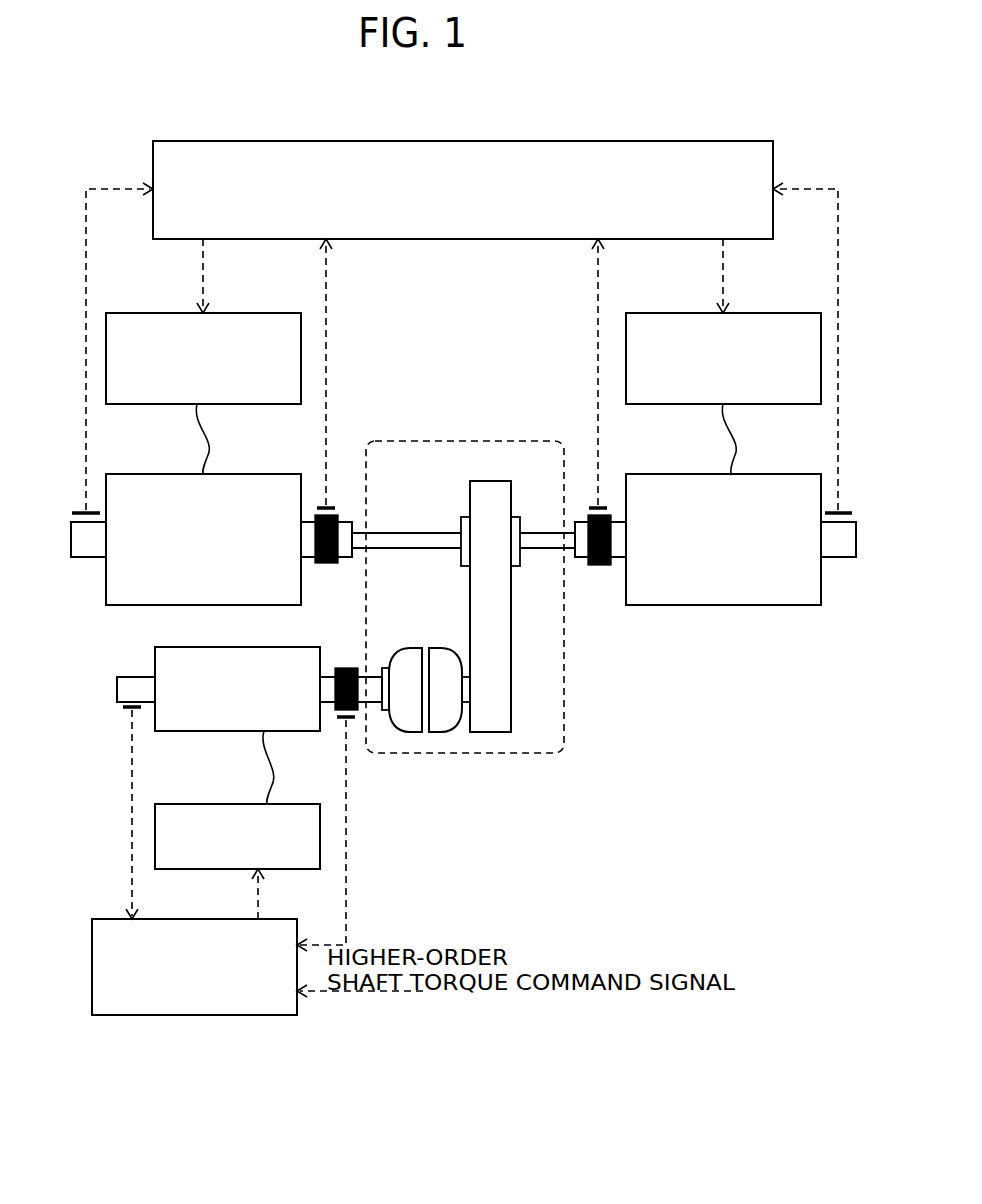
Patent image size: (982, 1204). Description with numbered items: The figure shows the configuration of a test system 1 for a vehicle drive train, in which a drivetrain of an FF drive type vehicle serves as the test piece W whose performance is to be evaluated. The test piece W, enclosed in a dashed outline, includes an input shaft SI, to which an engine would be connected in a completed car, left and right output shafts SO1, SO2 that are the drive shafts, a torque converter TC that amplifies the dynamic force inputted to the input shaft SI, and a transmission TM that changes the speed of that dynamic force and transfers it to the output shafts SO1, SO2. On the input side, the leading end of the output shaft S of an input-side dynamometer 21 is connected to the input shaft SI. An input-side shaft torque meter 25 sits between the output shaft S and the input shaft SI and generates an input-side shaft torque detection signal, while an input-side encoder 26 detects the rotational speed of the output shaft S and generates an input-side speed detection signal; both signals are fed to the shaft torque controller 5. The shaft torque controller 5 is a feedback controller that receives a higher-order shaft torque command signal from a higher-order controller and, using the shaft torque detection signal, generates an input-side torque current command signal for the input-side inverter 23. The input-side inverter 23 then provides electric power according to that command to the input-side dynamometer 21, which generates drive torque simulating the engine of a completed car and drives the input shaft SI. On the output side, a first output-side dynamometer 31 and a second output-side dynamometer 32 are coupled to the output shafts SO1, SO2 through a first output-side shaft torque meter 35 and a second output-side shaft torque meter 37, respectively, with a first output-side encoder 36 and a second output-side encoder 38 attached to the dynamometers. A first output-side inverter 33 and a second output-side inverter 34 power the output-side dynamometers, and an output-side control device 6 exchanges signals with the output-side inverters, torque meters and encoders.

The test system 1 is at (724, 893).
The shaft torque controller 5 is at (266, 1014).
The output-side control device 6 is at (738, 141).
The input-side dynamometer 21 is at (295, 731).
The input-side inverter 23 is at (228, 806).
The input-side shaft torque meter 25 is at (345, 668).
The input-side encoder 26 is at (130, 711).
The first output-side dynamometer 31 is at (780, 474).
The second output-side dynamometer 32 is at (262, 474).
The first output-side inverter 33 is at (782, 313).
The second output-side inverter 34 is at (262, 313).
The first output-side shaft torque meter 35 is at (598, 566).
The first output-side encoder 36 is at (848, 511).
The second output-side shaft torque meter 37 is at (334, 564).
The second output-side encoder 38 is at (78, 511).
The test piece W is at (513, 441).
The torque converter TC is at (418, 650).
The transmission TM is at (476, 582).
The input shaft SI is at (377, 702).
The first output shaft SO1 is at (537, 538).
The second output shaft SO2 is at (417, 516).
The output shaft S is at (126, 678).